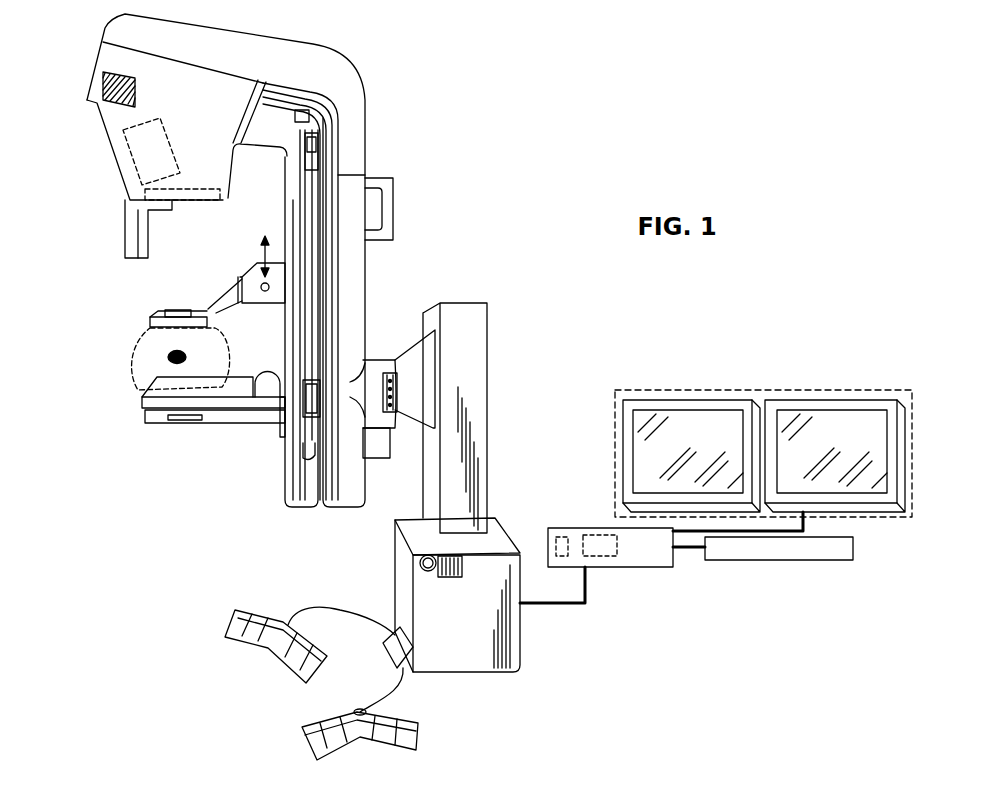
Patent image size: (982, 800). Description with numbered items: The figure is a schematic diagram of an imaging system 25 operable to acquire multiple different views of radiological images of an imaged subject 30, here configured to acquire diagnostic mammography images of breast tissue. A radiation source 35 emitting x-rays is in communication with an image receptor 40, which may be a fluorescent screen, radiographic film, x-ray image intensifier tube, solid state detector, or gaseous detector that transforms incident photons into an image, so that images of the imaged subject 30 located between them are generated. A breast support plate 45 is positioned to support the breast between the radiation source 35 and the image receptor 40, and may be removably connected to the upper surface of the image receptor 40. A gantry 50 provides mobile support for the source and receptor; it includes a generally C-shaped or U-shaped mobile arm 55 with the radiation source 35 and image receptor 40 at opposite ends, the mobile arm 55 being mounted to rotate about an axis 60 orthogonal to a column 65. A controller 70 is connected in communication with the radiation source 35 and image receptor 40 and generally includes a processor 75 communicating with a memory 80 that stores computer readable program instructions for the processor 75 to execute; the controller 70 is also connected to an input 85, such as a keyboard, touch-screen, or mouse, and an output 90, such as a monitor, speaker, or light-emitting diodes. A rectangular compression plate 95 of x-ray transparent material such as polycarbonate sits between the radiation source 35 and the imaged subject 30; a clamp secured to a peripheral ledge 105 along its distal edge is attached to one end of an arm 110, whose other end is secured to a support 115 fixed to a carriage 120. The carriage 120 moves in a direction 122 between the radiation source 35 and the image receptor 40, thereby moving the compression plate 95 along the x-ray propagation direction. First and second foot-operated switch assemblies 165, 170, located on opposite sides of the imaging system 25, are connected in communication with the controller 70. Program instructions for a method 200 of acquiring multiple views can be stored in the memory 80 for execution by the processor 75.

The imaging system 25 is at (464, 114).
The imaged subject 30 is at (135, 338).
The radiation source 35 is at (130, 157).
The image receptor 40 is at (212, 418).
The breast support plate 45 is at (162, 403).
The gantry 50 is at (468, 264).
The mobile arm 55 is at (300, 57).
The axis 60 is at (130, 201).
The column 65 is at (472, 352).
The controller 70 is at (653, 568).
The processor 75 is at (562, 535).
The memory 80 is at (599, 560).
The input 85 is at (825, 561).
The output 90 is at (762, 390).
The rectangular compression plate 95 is at (160, 331).
The peripheral ledge 105 is at (210, 316).
The arm 110 is at (177, 311).
The support 115 is at (275, 267).
The carriage 120 is at (292, 303).
The direction 122 is at (262, 257).
The first foot-operated switch assembly 165 is at (296, 755).
The second foot-operated switch assembly 170 is at (252, 603).
The method 200 is at (394, 647).